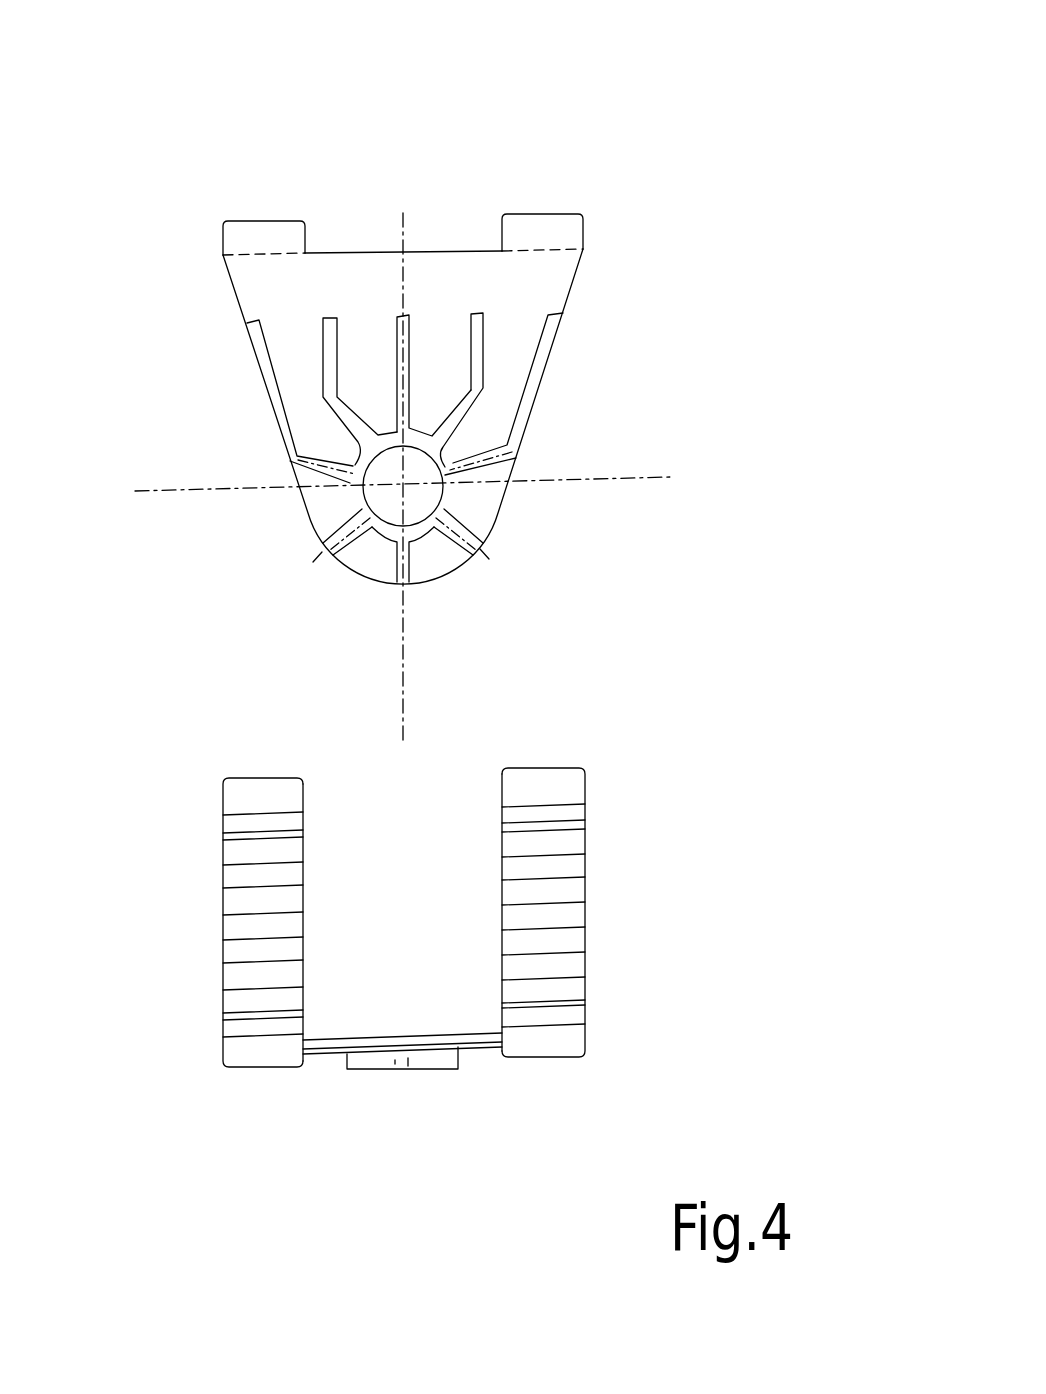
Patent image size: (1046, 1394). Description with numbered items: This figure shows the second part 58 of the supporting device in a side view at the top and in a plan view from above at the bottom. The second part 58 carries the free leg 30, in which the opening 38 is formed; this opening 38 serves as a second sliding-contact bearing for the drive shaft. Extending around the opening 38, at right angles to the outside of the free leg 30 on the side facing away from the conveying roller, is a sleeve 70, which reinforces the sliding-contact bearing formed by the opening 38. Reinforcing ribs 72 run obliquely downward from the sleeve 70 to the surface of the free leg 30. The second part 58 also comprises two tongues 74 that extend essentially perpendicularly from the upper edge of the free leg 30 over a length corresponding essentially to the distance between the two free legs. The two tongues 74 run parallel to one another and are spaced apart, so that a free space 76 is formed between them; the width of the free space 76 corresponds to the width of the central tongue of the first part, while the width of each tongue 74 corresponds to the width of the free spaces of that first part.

The free leg 30 is at (550, 277).
The opening 38 is at (367, 497).
The second part 58 is at (565, 361).
The sleeve 70 is at (383, 522).
The reinforcing ribs 72 is at (330, 356).
The tongues 74 is at (532, 230).
The free space 76 is at (415, 922).